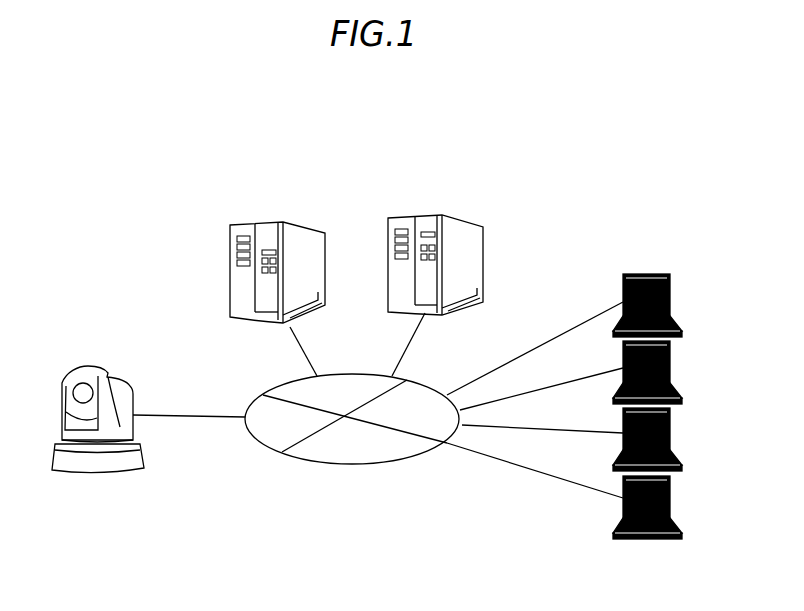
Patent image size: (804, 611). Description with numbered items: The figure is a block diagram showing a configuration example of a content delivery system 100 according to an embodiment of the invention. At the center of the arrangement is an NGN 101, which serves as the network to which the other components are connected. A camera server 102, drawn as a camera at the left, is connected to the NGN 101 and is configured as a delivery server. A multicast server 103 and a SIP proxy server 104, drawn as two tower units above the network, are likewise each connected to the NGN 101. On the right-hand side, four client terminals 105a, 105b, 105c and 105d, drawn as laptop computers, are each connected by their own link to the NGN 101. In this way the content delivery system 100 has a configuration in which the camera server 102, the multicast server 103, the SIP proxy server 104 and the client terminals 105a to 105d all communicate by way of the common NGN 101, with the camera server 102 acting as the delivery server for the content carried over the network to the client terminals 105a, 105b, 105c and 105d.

The content delivery system 100 is at (84, 105).
The NGN 101 is at (340, 457).
The camera server 102 is at (68, 465).
The multicast server 103 is at (262, 223).
The SIP proxy server 104 is at (410, 218).
The client terminal 105a is at (670, 296).
The client terminal 105b is at (670, 363).
The client terminal 105c is at (670, 430).
The client terminal 105d is at (670, 496).